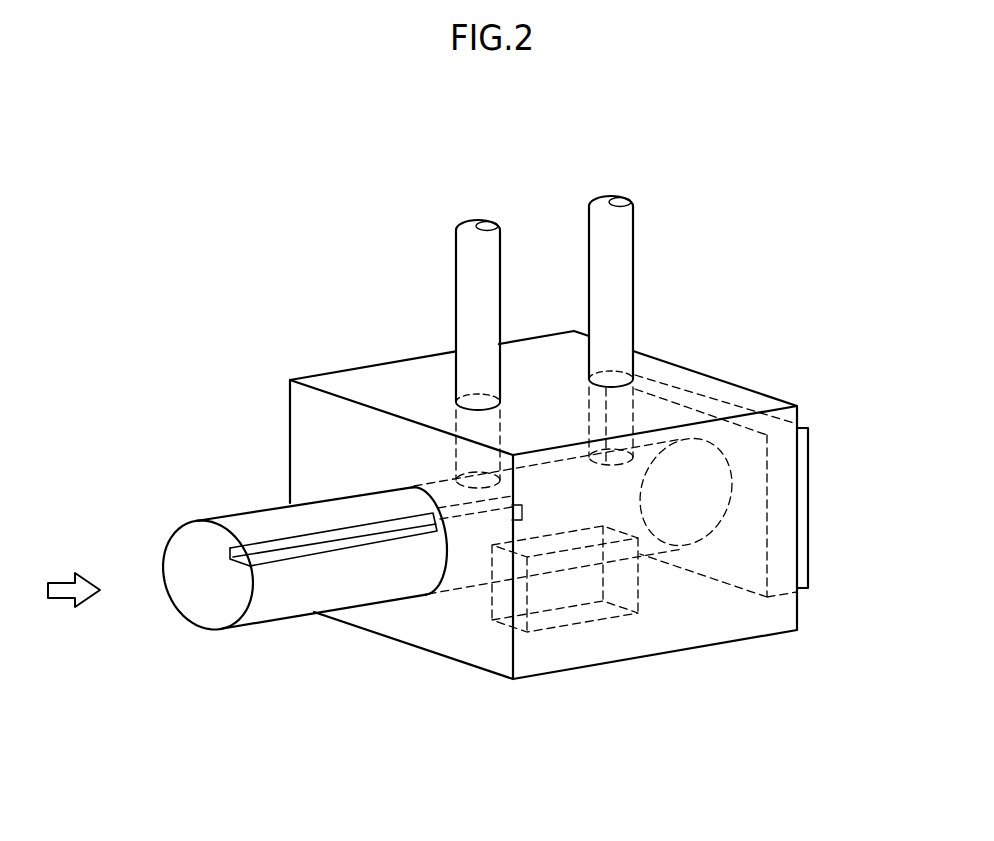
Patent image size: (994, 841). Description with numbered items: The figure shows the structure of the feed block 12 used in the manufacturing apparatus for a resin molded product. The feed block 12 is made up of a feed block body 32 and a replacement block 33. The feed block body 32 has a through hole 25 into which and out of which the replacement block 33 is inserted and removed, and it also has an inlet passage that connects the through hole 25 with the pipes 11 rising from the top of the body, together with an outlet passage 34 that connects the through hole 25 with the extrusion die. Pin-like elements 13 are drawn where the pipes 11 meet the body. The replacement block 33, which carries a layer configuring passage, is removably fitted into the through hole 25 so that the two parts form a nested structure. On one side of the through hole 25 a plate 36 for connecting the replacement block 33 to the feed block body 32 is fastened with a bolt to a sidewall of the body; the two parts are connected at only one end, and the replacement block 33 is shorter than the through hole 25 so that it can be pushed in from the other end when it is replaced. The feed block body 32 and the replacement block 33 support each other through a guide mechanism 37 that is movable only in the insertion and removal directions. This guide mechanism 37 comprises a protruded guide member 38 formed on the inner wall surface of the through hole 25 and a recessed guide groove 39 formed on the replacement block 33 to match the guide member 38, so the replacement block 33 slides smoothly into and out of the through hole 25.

The pipe 11 is at (466, 275).
The feed block 12 is at (592, 515).
The pin insertion hole 13 is at (447, 388).
The through hole 25 is at (553, 458).
The feed block body 32 is at (360, 380).
The replacement block 33 is at (183, 552).
The outlet passage 34 is at (572, 612).
The plate 36 is at (806, 478).
The guide mechanism 37 is at (376, 565).
The guide member 38 is at (476, 520).
The guide groove 39 is at (231, 562).